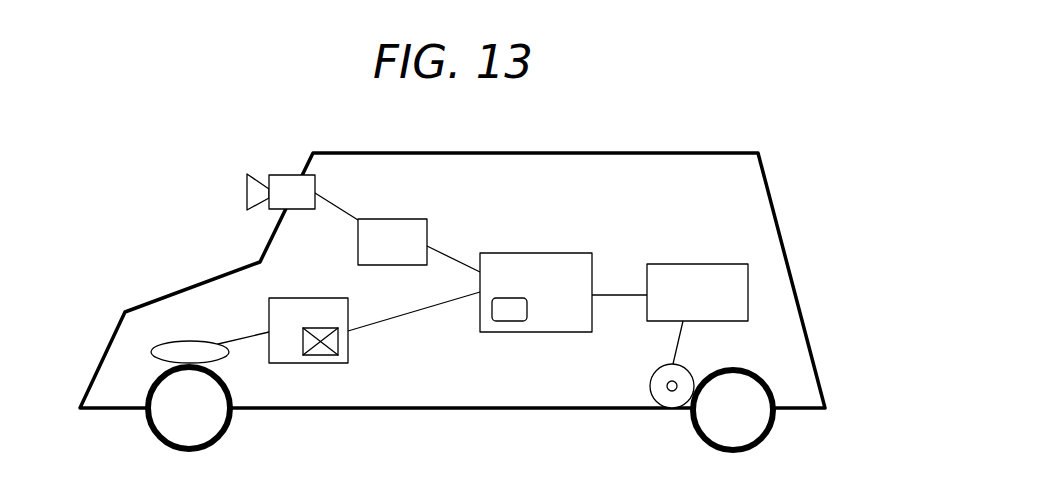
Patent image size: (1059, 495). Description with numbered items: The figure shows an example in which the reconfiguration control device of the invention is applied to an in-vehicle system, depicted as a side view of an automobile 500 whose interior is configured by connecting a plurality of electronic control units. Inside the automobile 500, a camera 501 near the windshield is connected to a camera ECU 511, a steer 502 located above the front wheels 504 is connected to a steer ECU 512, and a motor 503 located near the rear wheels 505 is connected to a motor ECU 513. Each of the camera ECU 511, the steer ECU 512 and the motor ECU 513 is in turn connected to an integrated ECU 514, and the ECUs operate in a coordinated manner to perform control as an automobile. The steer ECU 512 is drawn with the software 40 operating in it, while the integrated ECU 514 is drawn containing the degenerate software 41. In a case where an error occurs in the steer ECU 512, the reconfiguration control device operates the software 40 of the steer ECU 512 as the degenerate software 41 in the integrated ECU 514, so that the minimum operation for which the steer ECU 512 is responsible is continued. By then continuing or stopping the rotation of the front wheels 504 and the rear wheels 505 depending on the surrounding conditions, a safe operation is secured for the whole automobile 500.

The automobile 500 is at (696, 150).
The camera 501 is at (281, 173).
The steer 502 is at (193, 339).
The motor 503 is at (689, 367).
The front wheels 504 is at (229, 389).
The rear wheels 505 is at (771, 384).
The camera ECU 511 is at (406, 217).
The steer ECU 512 is at (329, 296).
The motor ECU 513 is at (716, 262).
The integrated ECU 514 is at (543, 250).
The software 40 is at (320, 328).
The degenerate software 41 is at (508, 296).